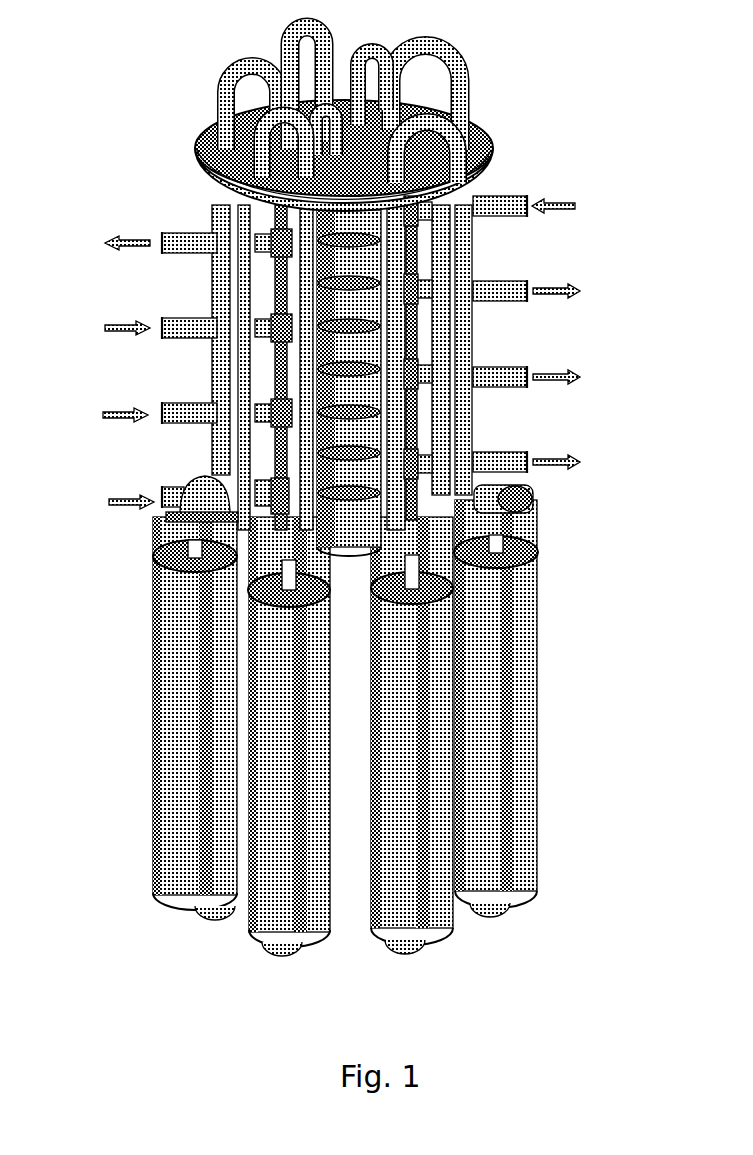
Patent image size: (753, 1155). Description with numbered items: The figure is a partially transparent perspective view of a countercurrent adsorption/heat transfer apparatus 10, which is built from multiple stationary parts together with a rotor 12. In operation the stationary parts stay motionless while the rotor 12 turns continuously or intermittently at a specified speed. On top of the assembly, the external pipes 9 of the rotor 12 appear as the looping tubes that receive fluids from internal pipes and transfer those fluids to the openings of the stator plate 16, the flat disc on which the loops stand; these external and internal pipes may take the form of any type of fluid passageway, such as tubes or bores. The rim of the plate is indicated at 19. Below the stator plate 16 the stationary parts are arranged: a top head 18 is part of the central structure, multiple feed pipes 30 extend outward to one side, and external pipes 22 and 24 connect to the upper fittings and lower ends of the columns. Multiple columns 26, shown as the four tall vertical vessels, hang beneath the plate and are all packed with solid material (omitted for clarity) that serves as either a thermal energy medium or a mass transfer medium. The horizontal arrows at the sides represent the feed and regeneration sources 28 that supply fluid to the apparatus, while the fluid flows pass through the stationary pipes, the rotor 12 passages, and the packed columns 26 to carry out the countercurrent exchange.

The external pipes 9 is at (467, 58).
The apparatus 10 is at (570, 135).
The rotor 12 is at (205, 85).
The stator plate 16 is at (190, 166).
The top head 18 is at (526, 251).
The plate rim 19 is at (483, 110).
The external pipes 22 is at (183, 472).
The external pipes 24 is at (225, 928).
The columns 26 is at (138, 585).
The feed and regeneration sources 28 is at (107, 404).
The feed pipes 30 is at (189, 229).